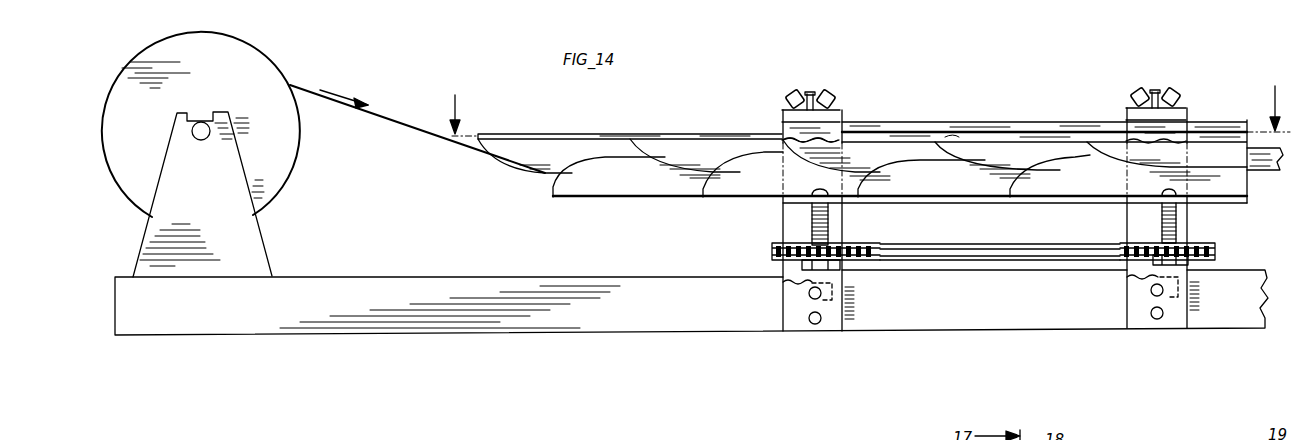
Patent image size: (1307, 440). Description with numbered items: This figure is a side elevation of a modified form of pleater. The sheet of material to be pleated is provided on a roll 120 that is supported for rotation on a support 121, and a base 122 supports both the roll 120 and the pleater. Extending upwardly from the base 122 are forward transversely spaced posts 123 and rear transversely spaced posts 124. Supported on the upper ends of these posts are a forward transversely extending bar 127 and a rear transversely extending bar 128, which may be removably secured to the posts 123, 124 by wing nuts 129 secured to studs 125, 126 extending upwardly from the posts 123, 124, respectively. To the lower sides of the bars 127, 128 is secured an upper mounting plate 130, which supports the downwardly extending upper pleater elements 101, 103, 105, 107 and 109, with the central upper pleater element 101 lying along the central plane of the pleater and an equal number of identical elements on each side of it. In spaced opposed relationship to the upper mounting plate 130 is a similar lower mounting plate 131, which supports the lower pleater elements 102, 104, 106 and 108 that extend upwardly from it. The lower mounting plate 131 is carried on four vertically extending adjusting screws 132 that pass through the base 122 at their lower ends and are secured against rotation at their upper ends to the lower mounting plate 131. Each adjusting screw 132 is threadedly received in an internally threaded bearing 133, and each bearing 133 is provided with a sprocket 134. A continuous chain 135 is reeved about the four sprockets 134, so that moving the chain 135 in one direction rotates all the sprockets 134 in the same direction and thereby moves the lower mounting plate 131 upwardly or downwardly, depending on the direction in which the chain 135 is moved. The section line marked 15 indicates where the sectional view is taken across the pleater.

The central upper pleater element 101 is at (562, 161).
The lower pleater element 102 is at (632, 187).
The upper pleater element 103 is at (718, 160).
The lower pleater element 104 is at (761, 189).
The upper pleater element 105 is at (878, 160).
The lower pleater element 106 is at (928, 188).
The upper pleater element 107 is at (1015, 158).
The lower pleater element 108 is at (1083, 189).
The upper pleater element 109 is at (1228, 158).
The roll 120 is at (272, 60).
The support 121 is at (260, 231).
The base 122 is at (441, 277).
The forward posts 123 is at (1190, 322).
The rear posts 124 is at (845, 325).
The stud 125 is at (1157, 92).
The stud 126 is at (815, 92).
The forward transversely extending bar 127 is at (1186, 115).
The rear transversely extending bar 128 is at (840, 115).
The wing nut 129 is at (792, 91).
The upper mounting plate 130 is at (972, 123).
The lower mounting plate 131 is at (1033, 200).
The adjusting screw 132 is at (830, 229).
The internally threaded bearing 133 is at (840, 267).
The sprocket 134 is at (772, 252).
The continuous chain 135 is at (955, 243).
The section line 15 is at (869, 102).